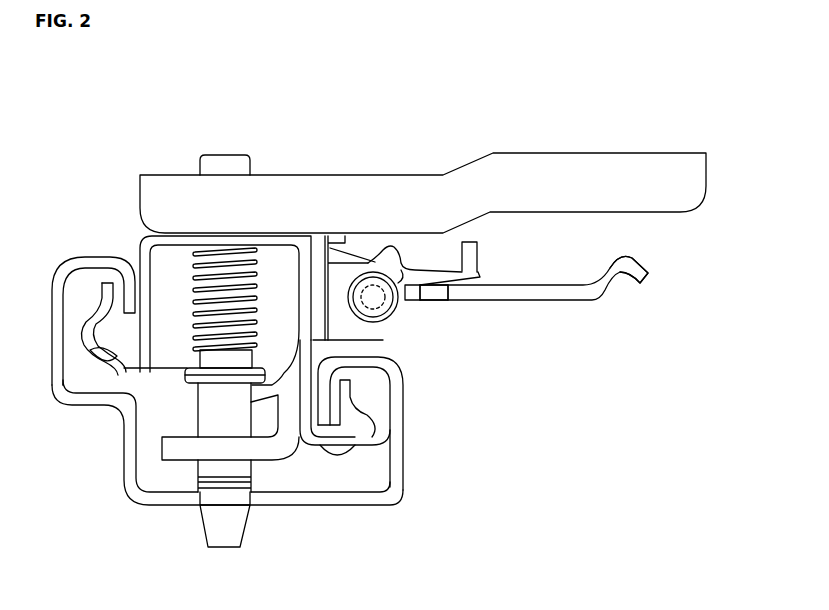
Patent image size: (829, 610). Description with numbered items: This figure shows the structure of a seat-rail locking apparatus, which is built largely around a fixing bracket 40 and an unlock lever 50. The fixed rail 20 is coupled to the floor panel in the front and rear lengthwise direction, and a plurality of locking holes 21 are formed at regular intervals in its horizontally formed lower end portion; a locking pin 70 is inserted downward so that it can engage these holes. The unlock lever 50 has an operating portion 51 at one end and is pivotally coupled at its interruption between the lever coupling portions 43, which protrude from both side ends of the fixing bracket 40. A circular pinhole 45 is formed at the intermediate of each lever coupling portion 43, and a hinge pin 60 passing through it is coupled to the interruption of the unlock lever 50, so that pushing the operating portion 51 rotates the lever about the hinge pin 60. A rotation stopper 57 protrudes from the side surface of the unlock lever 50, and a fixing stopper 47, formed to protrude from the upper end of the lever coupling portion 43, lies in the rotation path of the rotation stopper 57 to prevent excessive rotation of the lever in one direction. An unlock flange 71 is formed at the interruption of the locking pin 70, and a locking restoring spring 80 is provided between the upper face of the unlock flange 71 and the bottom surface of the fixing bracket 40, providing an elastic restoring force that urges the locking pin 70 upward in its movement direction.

The fixed rail 20 is at (126, 453).
The locking hole 21 is at (243, 503).
The fixing bracket 40 is at (525, 165).
The lever coupling portion 43 is at (344, 268).
The circular pinhole 45 is at (356, 338).
The fixing stopper 47 is at (400, 258).
The unlock lever 50 is at (520, 304).
The operating portion 51 is at (588, 283).
The rotation stopper 57 is at (445, 300).
The hinge pin 60 is at (377, 304).
The locking pin 70 is at (225, 155).
The unlock flange 71 is at (124, 368).
The locking restoring spring 80 is at (140, 246).